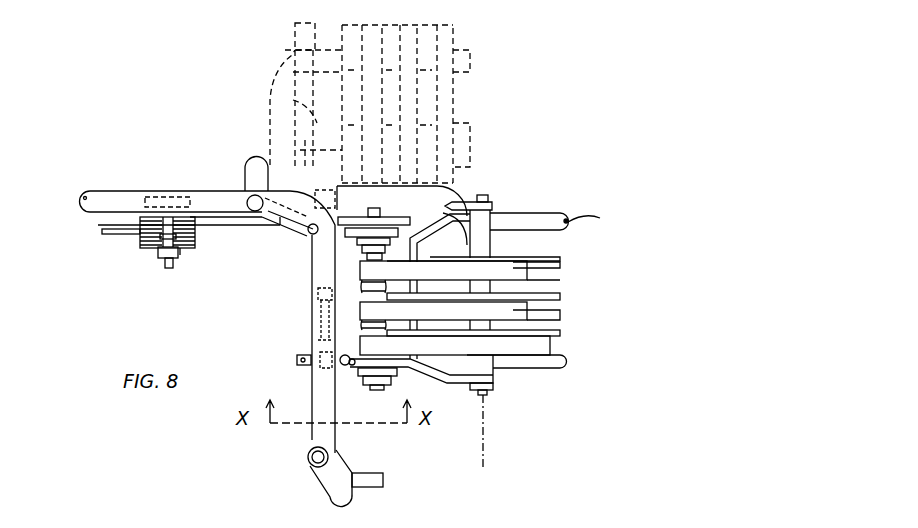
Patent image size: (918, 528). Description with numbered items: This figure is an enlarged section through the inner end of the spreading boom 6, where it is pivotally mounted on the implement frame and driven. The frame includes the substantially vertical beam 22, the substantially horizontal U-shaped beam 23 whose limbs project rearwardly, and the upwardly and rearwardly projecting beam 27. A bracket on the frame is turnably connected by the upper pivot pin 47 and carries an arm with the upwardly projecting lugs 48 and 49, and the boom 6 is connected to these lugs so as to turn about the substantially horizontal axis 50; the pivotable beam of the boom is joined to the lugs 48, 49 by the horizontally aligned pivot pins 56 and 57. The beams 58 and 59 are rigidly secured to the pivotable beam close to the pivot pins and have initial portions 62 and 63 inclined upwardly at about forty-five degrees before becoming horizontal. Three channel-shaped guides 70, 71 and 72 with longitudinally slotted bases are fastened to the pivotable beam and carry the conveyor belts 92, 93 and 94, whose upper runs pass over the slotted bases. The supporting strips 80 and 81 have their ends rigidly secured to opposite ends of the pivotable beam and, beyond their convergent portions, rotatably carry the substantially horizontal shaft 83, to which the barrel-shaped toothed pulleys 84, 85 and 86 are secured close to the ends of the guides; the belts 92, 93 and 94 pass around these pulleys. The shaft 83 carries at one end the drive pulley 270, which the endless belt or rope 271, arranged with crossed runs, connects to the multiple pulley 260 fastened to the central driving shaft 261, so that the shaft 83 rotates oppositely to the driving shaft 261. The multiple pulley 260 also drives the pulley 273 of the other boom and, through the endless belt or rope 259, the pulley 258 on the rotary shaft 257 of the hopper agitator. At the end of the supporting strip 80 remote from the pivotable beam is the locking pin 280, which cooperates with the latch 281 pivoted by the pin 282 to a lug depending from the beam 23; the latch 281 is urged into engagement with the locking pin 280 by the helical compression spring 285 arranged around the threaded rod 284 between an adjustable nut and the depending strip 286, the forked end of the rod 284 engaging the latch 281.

The spreading boom 6 is at (473, 107).
The beam 22 is at (333, 470).
The U-shaped beam 23 is at (133, 191).
The beam 27 is at (245, 168).
The upper pivot pin 47 is at (305, 238).
The lug 48 is at (466, 388).
The lug 49 is at (493, 207).
The horizontal axis 50 is at (482, 453).
The pivot pin 56 is at (486, 428).
The pivot pin 57 is at (484, 196).
The beam 58 is at (570, 364).
The beam 59 is at (587, 233).
The initial portion 62 is at (492, 390).
The initial portion 63 is at (510, 216).
The channel-shaped guide 70 is at (563, 333).
The channel-shaped guide 71 is at (562, 297).
The channel-shaped guide 72 is at (563, 260).
The supporting strip 80 is at (462, 380).
The supporting strip 81 is at (440, 238).
The horizontal shaft 83 is at (386, 386).
The pulley 84 is at (375, 328).
The pulley 85 is at (375, 293).
The pulley 86 is at (365, 259).
The conveyor belt 92 is at (530, 370).
The conveyor belt 93 is at (520, 306).
The conveyor belt 94 is at (515, 236).
The rotary shaft 257 is at (163, 265).
The pulley 258 is at (183, 255).
The endless belt or rope 259 is at (140, 243).
The multiple pulley 260 is at (197, 240).
The driving shaft 261 is at (383, 485).
The drive pulley 270 is at (402, 215).
The endless belt or rope 271 is at (240, 226).
The pulley 273 is at (102, 233).
The locking pin 280 is at (330, 367).
The latch 281 is at (340, 367).
The pin 282 is at (297, 362).
The rod 284 is at (318, 293).
The helical compression spring 285 is at (318, 313).
The strip 286 is at (318, 333).